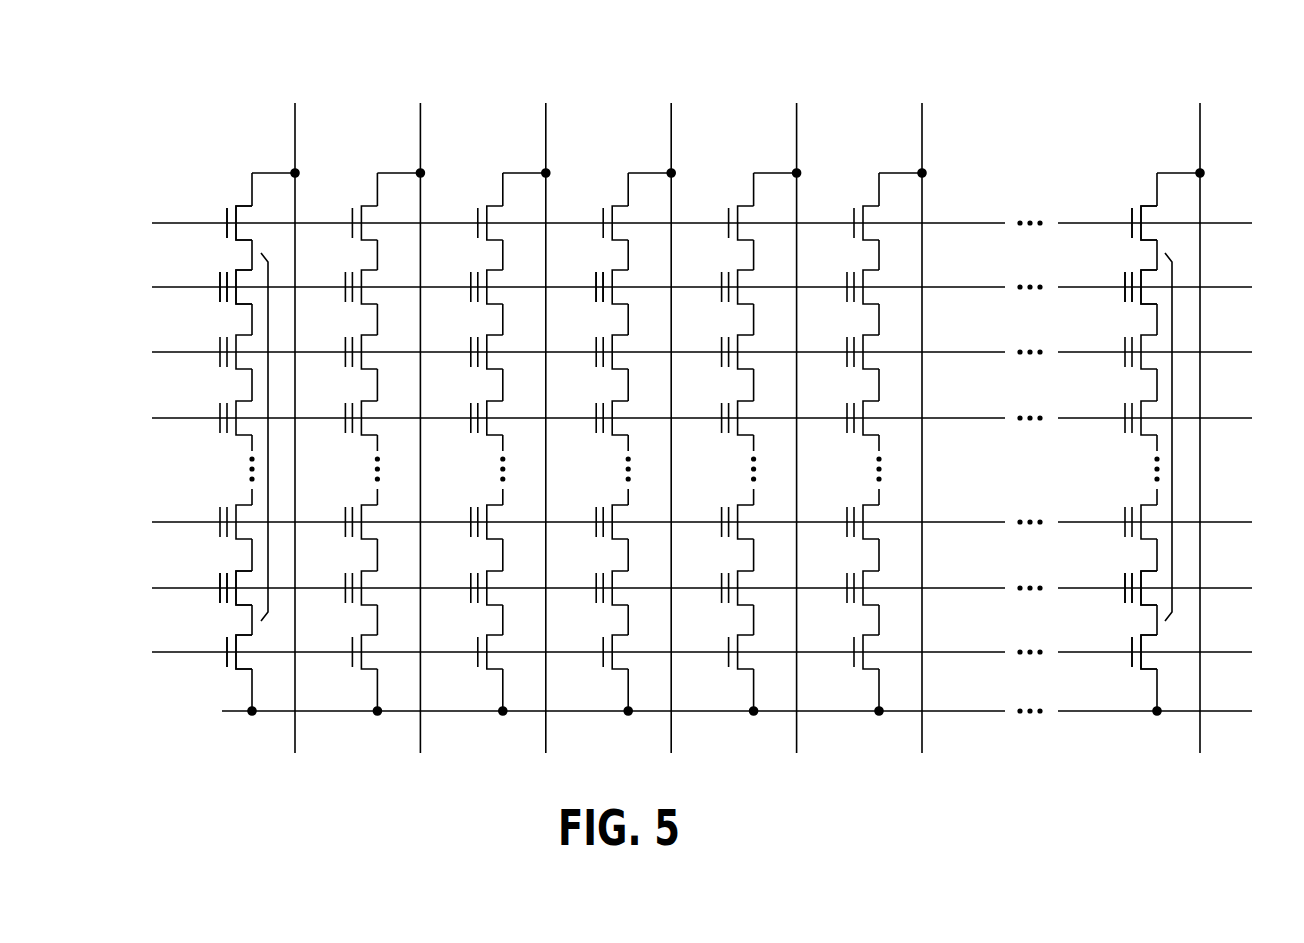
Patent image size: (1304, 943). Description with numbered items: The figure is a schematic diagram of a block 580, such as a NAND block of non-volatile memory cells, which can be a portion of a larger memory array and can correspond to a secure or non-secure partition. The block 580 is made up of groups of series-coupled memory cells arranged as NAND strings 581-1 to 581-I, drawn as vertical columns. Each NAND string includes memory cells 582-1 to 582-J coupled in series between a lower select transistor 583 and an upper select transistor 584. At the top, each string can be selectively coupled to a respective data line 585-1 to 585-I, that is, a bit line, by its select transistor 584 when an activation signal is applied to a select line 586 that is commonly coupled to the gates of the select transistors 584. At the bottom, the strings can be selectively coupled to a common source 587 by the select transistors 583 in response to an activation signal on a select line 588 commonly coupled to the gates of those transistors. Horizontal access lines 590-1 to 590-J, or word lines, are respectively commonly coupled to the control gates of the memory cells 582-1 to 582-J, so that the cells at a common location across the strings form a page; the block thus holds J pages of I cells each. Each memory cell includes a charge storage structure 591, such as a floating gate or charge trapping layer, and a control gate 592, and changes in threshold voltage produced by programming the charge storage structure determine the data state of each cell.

The block 580 is at (1046, 88).
The NAND string 581-1 is at (268, 466).
The NAND string 581-I is at (1172, 466).
The memory cell 582-1 is at (245, 607).
The memory cell 582-J is at (250, 303).
The select transistor 583 is at (245, 672).
The select transistor 584 is at (246, 205).
The data line 585-1 is at (295, 130).
The data line 585-I is at (1200, 135).
The select line 586 is at (160, 223).
The common source 587 is at (455, 713).
The select line 588 is at (160, 653).
The access line 590-1 is at (185, 588).
The access line 590-J is at (185, 287).
The charge storage structure 591 is at (600, 270).
The control gate 592 is at (597, 296).